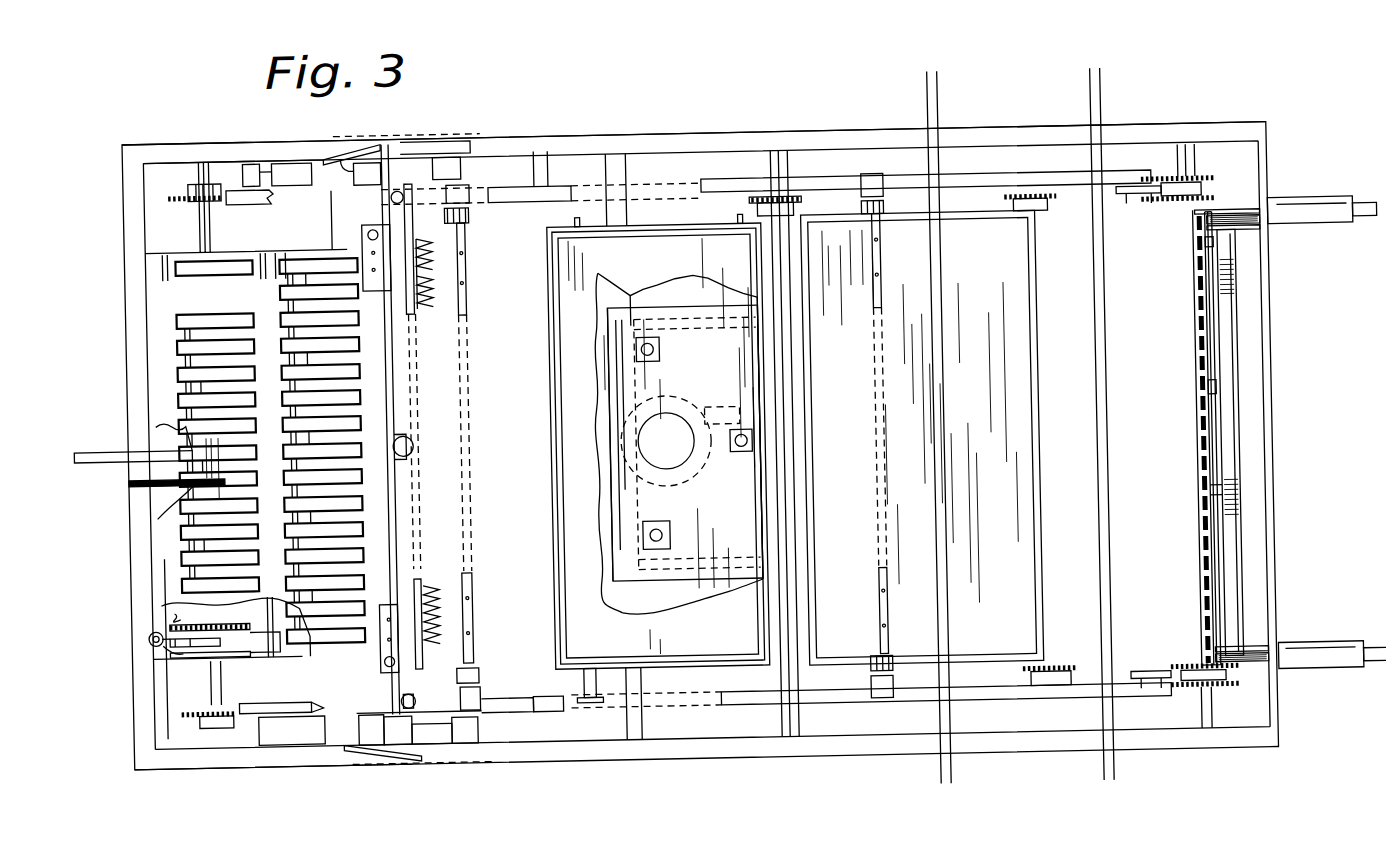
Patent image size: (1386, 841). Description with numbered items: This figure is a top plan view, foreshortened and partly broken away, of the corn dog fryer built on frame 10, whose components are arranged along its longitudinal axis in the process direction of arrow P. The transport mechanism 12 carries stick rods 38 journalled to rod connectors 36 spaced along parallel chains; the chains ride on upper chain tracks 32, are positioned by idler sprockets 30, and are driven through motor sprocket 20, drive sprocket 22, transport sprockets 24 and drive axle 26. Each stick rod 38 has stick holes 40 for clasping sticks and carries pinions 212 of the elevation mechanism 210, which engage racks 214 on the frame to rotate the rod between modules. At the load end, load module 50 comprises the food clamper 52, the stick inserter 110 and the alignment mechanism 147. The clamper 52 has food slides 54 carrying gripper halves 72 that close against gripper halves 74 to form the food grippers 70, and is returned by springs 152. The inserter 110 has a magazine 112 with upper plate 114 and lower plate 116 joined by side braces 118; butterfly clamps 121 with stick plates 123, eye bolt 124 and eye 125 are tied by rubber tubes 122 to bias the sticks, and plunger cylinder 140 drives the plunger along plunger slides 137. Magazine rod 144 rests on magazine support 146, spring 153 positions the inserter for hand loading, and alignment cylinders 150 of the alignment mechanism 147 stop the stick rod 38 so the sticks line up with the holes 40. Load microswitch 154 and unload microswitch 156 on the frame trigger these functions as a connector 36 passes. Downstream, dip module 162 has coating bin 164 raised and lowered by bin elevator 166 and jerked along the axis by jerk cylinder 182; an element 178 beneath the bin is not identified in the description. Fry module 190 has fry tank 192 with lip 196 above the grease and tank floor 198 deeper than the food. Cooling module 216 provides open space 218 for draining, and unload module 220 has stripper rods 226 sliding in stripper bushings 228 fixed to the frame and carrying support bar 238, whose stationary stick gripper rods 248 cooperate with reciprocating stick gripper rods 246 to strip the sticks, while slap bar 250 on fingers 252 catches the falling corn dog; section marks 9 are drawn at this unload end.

The frame 10 is at (620, 145).
The load module 50 is at (245, 143).
The dip module 162 is at (673, 125).
The process direction arrow P is at (718, 119).
The transport mechanism 12 is at (190, 210).
The load microswitch 154 is at (292, 168).
The alignment mechanism 147 is at (376, 198).
The stick inserter 110 is at (355, 138).
The alignment cylinders 150 is at (392, 702).
The plunger slides 137 is at (362, 238).
The food slides 54 is at (410, 220).
The gripper halves 72 is at (421, 253).
The gripper halves 74 is at (424, 294).
The food clamper 52 is at (427, 327).
The food grippers 70 is at (426, 590).
The rod connectors 36 is at (468, 208).
The stick holes 40 is at (465, 288).
The stick rods 38 is at (466, 622).
The pinion gears 212 is at (885, 686).
The upper plate 114 is at (263, 455).
The magazine 112 is at (232, 466).
The magazine rod 144 is at (74, 453).
The magazine support 146 is at (122, 452).
The lower plate 116 is at (150, 450).
The spring 153 is at (125, 490).
The plunger cylinder 140 is at (408, 452).
The motor sprocket 20 is at (156, 560).
The side braces 118 is at (202, 612).
The stick plates 123 is at (158, 628).
The eye bolt 124 is at (138, 644).
The butterfly clamps 121 is at (158, 656).
The eye 125 is at (154, 650).
The rubber tubes 122 is at (232, 660).
The idler sprockets 30 is at (205, 708).
The unload microswitch 156 is at (310, 760).
The springs 152 is at (395, 765).
The upper chain tracks 32 is at (666, 717).
The coating bin 164 is at (668, 275).
The jerk cylinder 182 is at (702, 410).
The bin elevator 166 is at (672, 498).
The support 178 is at (571, 698).
The fry tank 192 is at (1032, 354).
The lip 196 is at (1036, 290).
The tank floor 198 is at (975, 316).
The elevation mechanism 210 is at (1018, 250).
The racks 214 is at (1059, 685).
The fry module 190 is at (1013, 136).
The cooling module 216 is at (1141, 117).
The drive axle 26 is at (1176, 182).
The transport sprockets 24 is at (1212, 195).
The drive sprocket 22 is at (1218, 214).
The unload module 220 is at (1250, 128).
The support bar 238 is at (1190, 319).
The slap bar 250 is at (1234, 354).
The fingers 252 is at (1225, 395).
The stick gripper rods 246 is at (1196, 510).
The stick gripper rods 248 is at (1196, 528).
The open space 218 is at (1131, 426).
The stripper rods 226 is at (1360, 221).
The stripper bushings 228 is at (1344, 690).
The section line 9 is at (1188, 666).